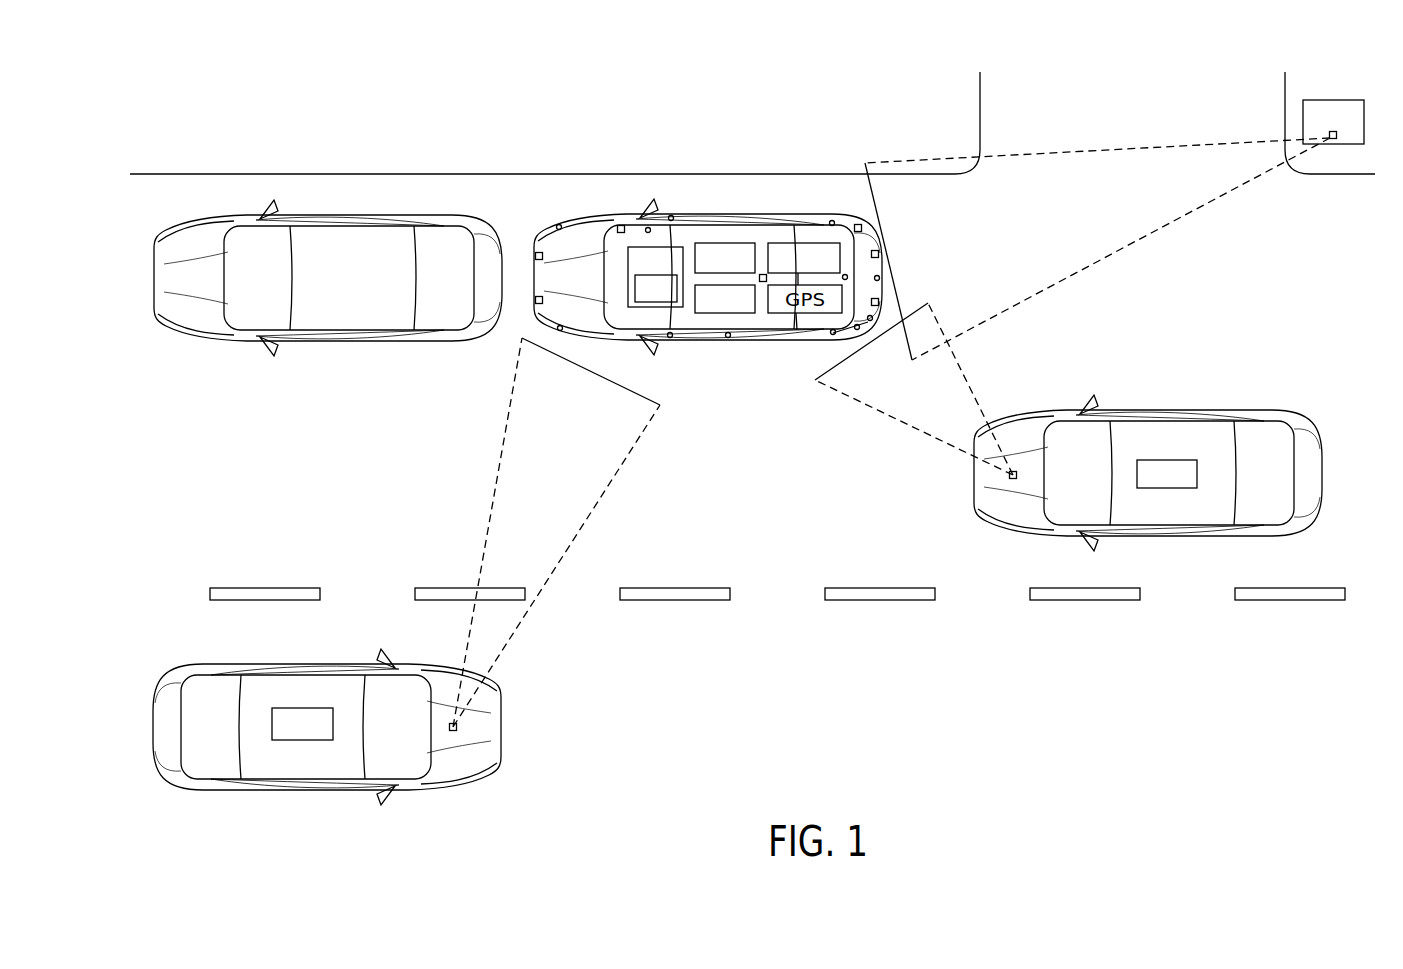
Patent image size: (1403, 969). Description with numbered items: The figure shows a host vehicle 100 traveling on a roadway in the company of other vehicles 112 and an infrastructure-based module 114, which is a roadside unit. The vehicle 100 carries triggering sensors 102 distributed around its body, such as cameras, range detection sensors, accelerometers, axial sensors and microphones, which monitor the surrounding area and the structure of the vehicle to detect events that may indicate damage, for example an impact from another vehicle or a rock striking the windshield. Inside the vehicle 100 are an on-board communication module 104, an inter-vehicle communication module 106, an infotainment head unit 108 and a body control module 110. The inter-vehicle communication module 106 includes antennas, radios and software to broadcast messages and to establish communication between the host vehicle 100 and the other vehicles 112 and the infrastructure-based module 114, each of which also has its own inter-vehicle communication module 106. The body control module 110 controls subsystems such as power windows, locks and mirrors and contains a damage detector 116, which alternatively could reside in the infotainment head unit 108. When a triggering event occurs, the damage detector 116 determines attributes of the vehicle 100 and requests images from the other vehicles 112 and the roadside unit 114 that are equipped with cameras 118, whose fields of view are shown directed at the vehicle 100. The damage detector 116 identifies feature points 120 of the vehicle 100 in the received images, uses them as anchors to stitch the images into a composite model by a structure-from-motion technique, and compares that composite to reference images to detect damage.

The vehicle 100 is at (588, 211).
The triggering sensors 102 is at (621, 226).
The on-board communication module 104 is at (793, 243).
The inter-vehicle communication module 106 is at (722, 243).
The infotainment head unit 108 is at (745, 313).
The body control module 110 is at (628, 277).
The other vehicle 112 is at (1278, 407).
The infrastructure-based module 114 is at (1303, 122).
The damage detector 116 is at (656, 288).
The cameras 118 is at (1333, 140).
The feature points 120 is at (559, 225).